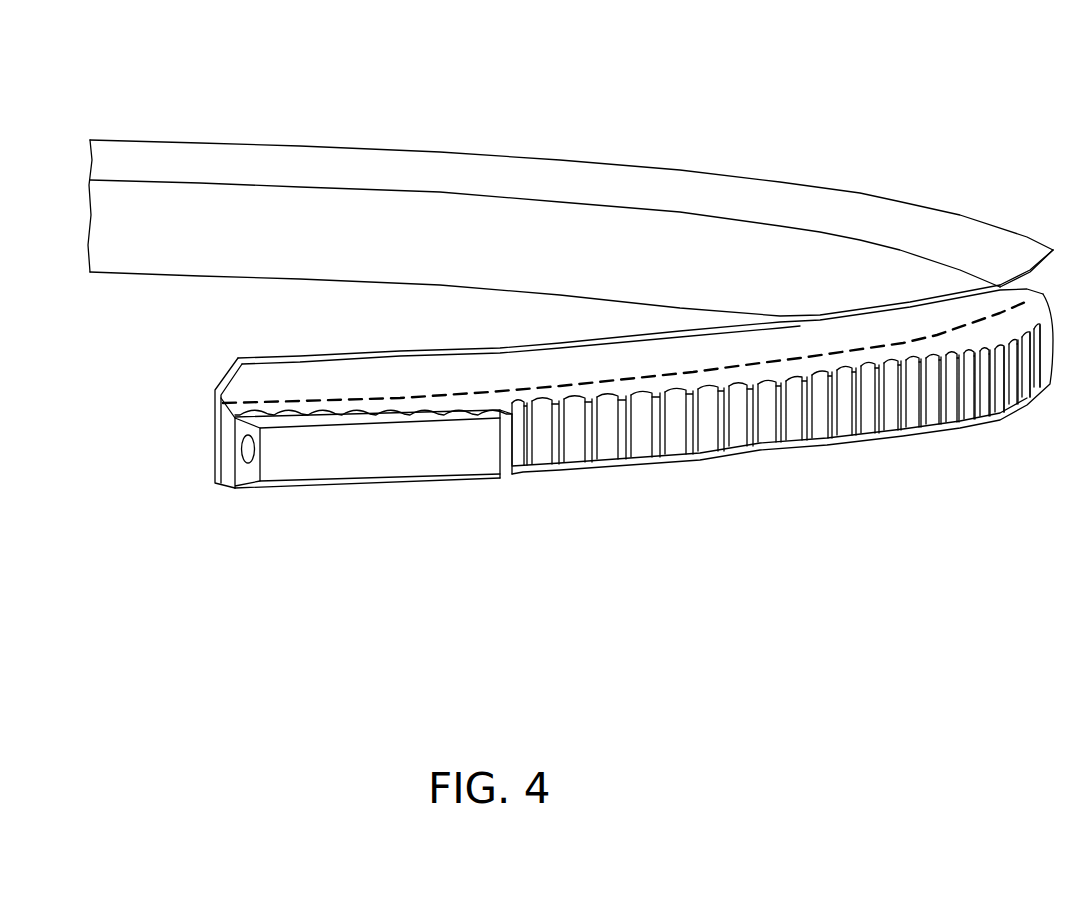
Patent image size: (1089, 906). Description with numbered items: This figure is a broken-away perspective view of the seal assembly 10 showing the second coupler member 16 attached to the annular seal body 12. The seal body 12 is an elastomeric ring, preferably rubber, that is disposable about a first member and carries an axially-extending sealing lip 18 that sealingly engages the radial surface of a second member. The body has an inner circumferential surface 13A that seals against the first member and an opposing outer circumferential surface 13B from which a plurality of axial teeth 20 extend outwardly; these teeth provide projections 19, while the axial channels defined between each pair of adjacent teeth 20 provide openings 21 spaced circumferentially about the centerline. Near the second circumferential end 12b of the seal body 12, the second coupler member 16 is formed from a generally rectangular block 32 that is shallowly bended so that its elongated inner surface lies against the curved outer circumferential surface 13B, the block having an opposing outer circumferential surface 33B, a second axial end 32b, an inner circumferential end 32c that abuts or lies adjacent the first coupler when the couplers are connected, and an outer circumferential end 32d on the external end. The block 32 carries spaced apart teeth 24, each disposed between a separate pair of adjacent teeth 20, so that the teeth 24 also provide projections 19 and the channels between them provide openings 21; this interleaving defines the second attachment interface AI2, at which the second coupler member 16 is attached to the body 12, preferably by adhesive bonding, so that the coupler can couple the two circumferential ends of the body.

The seal assembly 10 is at (590, 90).
The annular seal body 12 is at (171, 280).
The second circumferential end 12b is at (223, 452).
The inner circumferential surface 13A is at (265, 254).
The outer circumferential surface 13B is at (672, 437).
The second coupler member 16 is at (407, 495).
The sealing lip 18 is at (957, 220).
The projections 19 is at (593, 458).
The axial teeth 20 is at (319, 412).
The openings 21 is at (574, 454).
The teeth 24 is at (296, 413).
The block 32 is at (448, 462).
The second axial end 32b is at (349, 475).
The inner circumferential end 32c is at (248, 475).
The outer circumferential end 32d is at (505, 452).
The outer circumferential surface 33B is at (293, 460).
The second attachment interface AI2 is at (363, 409).